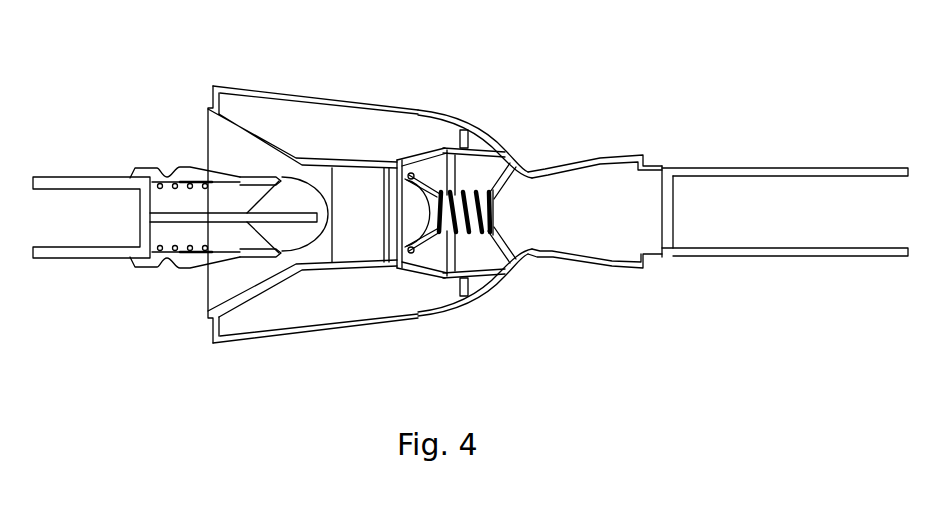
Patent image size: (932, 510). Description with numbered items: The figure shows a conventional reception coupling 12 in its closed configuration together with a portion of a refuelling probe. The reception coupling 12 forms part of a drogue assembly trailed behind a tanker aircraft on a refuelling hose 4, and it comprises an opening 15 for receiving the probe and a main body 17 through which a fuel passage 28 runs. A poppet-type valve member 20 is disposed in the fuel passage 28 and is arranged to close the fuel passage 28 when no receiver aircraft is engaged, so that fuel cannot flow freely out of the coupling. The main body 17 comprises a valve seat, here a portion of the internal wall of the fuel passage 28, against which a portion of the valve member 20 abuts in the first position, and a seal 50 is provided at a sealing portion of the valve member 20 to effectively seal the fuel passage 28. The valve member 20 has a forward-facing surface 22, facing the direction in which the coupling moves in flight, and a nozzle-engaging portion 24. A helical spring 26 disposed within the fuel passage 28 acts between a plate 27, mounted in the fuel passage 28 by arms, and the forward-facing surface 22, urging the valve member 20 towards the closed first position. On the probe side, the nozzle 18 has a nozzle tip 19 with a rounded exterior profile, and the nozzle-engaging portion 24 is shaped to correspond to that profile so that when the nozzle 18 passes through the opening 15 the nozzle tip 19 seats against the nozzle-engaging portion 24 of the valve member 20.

The refuelling hose 4 is at (850, 167).
The reception coupling 12 is at (527, 103).
The opening 15 is at (208, 309).
The main body 17 is at (588, 158).
The nozzle 18 is at (141, 272).
The nozzle tip 19 is at (331, 262).
The valve member 20 is at (430, 237).
The forward-facing surface 22 is at (447, 148).
The nozzle-engaging portion 24 is at (400, 165).
The helical spring 26 is at (500, 217).
The plate 27 is at (527, 168).
The fuel passage 28 is at (635, 229).
The seal 50 is at (400, 270).